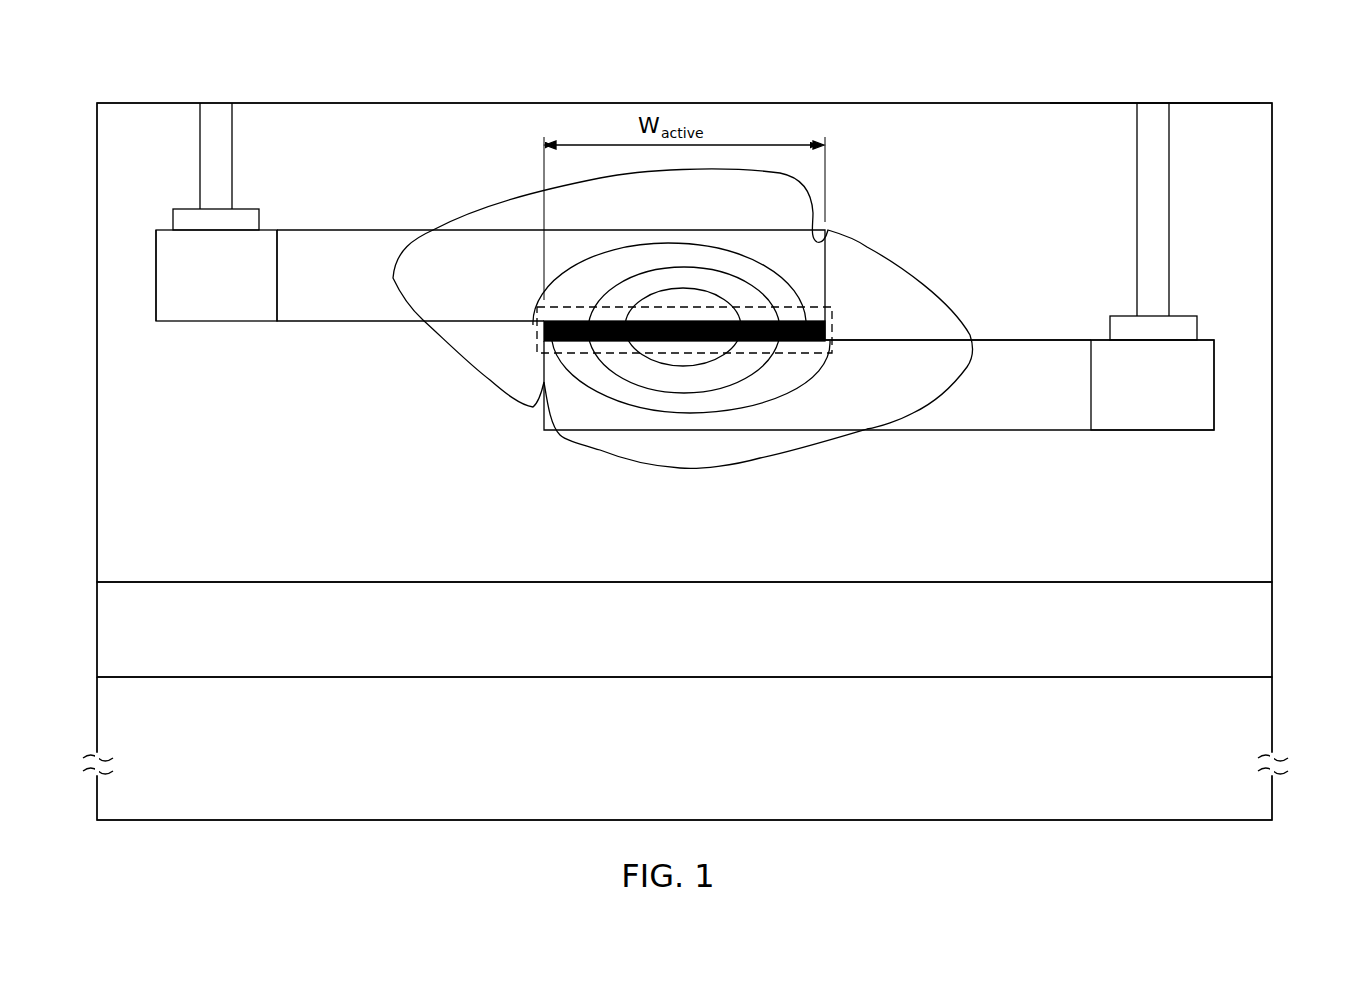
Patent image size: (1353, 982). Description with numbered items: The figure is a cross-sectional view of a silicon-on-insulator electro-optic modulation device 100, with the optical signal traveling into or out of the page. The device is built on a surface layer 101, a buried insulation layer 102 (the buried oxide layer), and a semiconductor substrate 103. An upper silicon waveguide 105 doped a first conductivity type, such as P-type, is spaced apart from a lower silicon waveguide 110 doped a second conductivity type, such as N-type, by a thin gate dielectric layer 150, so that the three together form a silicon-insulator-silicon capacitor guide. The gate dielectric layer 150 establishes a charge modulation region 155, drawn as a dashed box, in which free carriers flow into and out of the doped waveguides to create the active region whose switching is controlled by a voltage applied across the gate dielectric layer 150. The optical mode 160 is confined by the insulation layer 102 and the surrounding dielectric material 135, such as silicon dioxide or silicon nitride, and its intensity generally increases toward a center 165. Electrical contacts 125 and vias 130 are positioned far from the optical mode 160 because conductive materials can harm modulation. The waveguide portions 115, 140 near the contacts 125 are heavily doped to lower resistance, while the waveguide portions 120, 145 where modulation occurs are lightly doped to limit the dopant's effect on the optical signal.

The modulation device 100 is at (1250, 82).
The surface layer 101 is at (157, 554).
The buried insulation layer 102 is at (157, 644).
The semiconductor substrate 103 is at (157, 716).
The upper silicon waveguide 105 is at (194, 325).
The lower silicon waveguide 110 is at (1058, 293).
The heavily-doped waveguide portion 115 is at (154, 277).
The waveguide portion 120 is at (347, 323).
The electrical contacts 125 is at (172, 215).
The vias 130 is at (198, 152).
The dielectric material 135 is at (1078, 140).
The heavily-doped waveguide portion 140 is at (1124, 432).
The waveguide portion 145 is at (967, 432).
The gate dielectric layer 150 is at (584, 346).
The charge modulation region 155 is at (840, 325).
The optical mode 160 is at (735, 470).
The center of the optical mode 165 is at (706, 283).